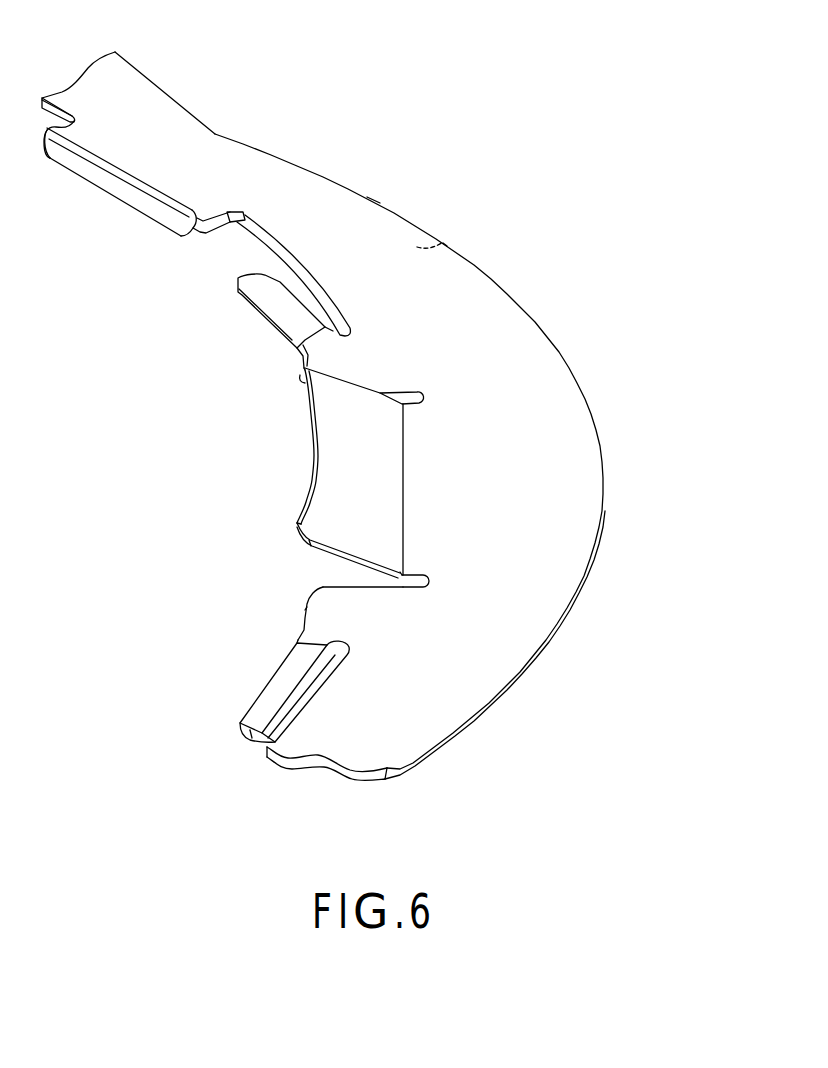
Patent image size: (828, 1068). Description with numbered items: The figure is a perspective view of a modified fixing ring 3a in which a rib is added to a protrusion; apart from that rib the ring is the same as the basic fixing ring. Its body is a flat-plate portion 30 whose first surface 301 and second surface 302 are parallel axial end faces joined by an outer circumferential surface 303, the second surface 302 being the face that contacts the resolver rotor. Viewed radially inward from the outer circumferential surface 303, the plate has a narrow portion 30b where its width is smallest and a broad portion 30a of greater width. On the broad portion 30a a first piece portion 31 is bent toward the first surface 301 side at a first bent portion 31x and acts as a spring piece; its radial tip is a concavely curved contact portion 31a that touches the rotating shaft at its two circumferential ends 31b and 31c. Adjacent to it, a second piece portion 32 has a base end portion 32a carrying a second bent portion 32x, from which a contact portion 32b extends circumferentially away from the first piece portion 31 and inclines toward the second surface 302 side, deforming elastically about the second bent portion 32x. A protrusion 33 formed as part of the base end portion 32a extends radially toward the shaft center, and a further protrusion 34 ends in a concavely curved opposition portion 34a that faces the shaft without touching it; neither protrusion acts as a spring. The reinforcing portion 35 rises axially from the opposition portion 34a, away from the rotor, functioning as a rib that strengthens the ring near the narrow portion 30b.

The flat-plate portion 30 is at (407, 416).
The broad portion 30a is at (592, 409).
The narrow portion 30b is at (224, 129).
The first surface 301 is at (402, 237).
The second surface 302 is at (445, 242).
The outer circumferential surface 303 is at (502, 695).
The fixing ring 3a is at (373, 188).
The first piece portion 31 is at (357, 477).
The contact portion 31a is at (265, 480).
The end of contact portion 31b is at (297, 523).
The end of contact portion 31c is at (266, 412).
The first bent portion 31x is at (412, 443).
The second piece portion 32 is at (328, 484).
The base end portion 32a is at (295, 348).
The contact portion 32b is at (277, 302).
The second bent portion 32x is at (305, 326).
The protrusion 33 is at (247, 403).
The protrusion 34 is at (136, 132).
The opposition portion 34a is at (143, 198).
The reinforcing portion 35 is at (125, 163).